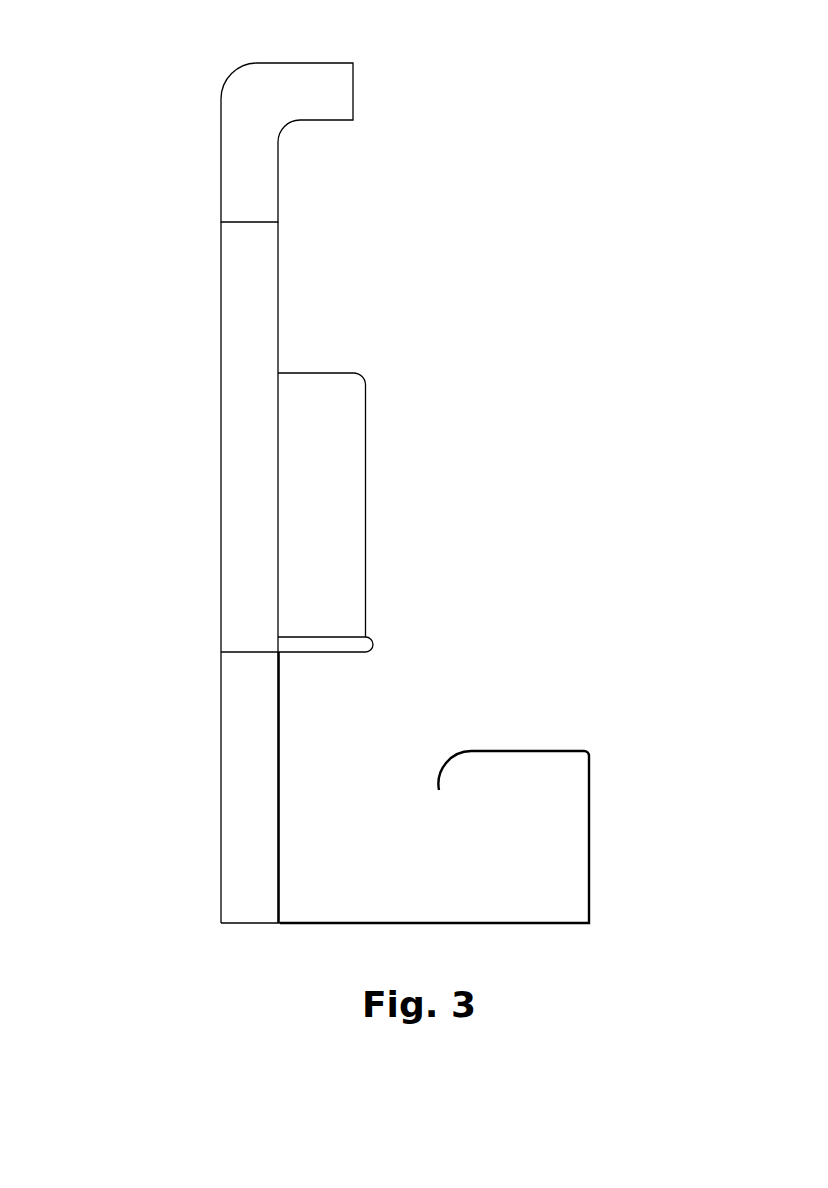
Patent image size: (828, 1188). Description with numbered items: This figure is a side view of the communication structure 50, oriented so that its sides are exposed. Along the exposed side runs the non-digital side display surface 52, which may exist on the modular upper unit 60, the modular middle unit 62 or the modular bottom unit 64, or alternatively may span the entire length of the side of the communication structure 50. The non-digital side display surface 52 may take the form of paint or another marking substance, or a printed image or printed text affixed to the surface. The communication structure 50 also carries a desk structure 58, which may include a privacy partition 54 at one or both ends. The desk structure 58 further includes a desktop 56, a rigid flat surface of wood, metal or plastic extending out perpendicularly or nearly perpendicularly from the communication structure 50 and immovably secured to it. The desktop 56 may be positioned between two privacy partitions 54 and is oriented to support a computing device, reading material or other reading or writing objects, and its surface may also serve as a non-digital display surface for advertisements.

The communication structure 50 is at (612, 138).
The non-digital side display surface 52 is at (200, 493).
The privacy partition 54 is at (332, 457).
The desktop 56 is at (375, 644).
The desk structure 58 is at (422, 577).
The modular upper unit 60 is at (221, 191).
The modular middle unit 62 is at (221, 549).
The modular bottom unit 64 is at (221, 864).